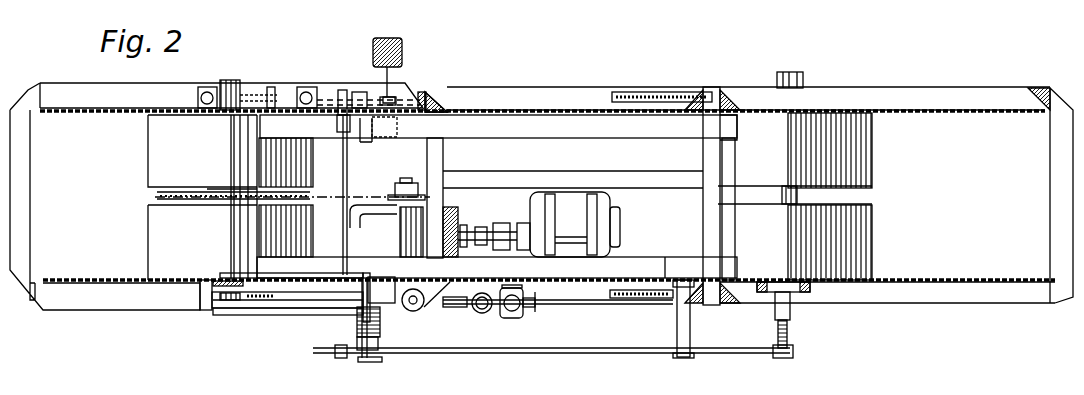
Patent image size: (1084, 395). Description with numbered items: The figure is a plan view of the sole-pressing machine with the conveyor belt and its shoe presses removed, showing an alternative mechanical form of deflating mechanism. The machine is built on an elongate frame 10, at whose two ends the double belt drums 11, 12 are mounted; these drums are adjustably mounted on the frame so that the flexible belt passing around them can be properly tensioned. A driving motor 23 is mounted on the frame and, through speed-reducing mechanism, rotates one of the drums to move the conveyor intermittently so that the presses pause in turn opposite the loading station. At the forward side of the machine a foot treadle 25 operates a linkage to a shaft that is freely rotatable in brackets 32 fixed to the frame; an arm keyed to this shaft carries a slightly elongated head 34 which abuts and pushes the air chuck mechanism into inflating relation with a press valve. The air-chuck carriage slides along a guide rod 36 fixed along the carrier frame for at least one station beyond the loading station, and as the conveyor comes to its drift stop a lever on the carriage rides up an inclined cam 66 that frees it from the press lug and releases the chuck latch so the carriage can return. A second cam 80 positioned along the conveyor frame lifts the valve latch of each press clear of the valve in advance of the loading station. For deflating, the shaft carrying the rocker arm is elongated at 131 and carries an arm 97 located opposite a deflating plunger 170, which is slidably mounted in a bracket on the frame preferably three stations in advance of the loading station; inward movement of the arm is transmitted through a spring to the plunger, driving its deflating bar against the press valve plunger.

The frame 10 is at (995, 296).
The belt drum 11 is at (150, 243).
The belt drum 12 is at (892, 245).
The driving motor 23 is at (608, 216).
The foot treadle 25 is at (405, 50).
The brackets 32 is at (398, 330).
The head 34 is at (372, 363).
The guide rod 36 is at (303, 304).
The inclined cam 66 is at (218, 274).
The cam 80 is at (468, 272).
The arm 97 is at (795, 353).
The elongated shaft 131 is at (603, 357).
The deflating plunger 170 is at (787, 335).